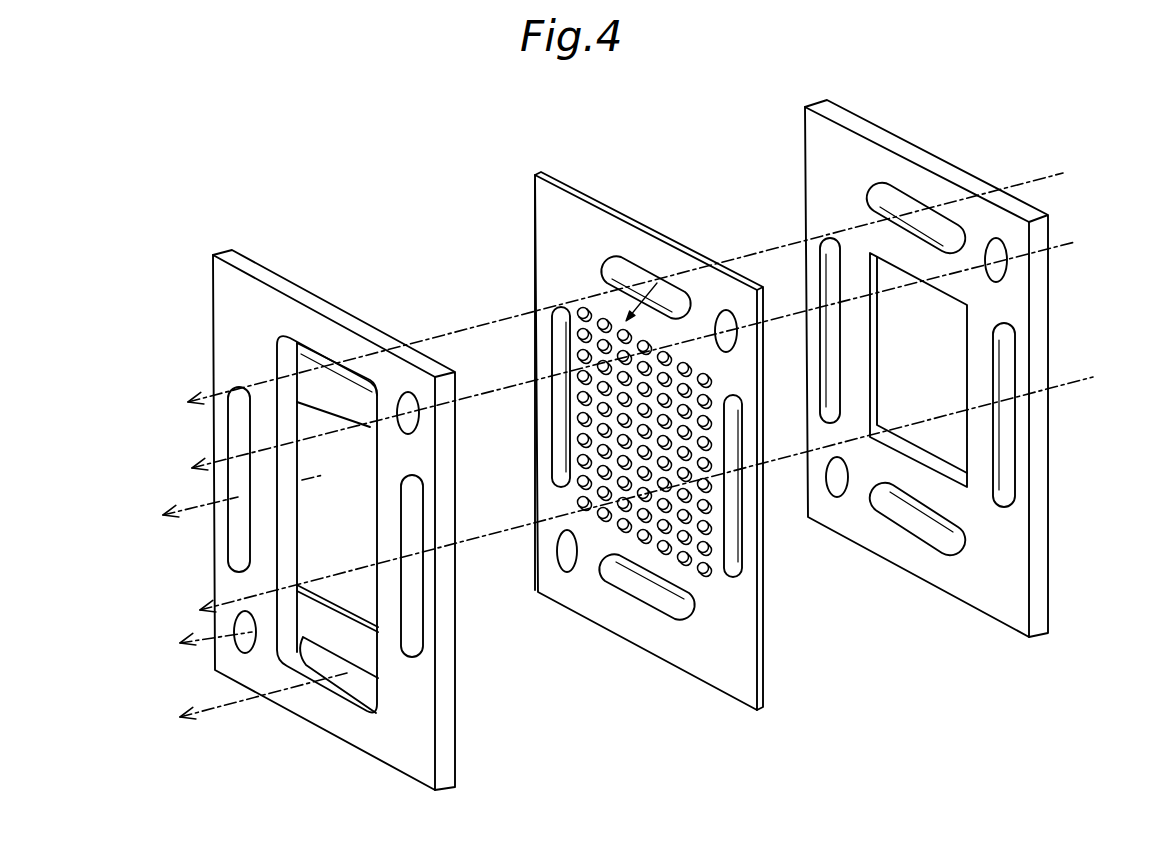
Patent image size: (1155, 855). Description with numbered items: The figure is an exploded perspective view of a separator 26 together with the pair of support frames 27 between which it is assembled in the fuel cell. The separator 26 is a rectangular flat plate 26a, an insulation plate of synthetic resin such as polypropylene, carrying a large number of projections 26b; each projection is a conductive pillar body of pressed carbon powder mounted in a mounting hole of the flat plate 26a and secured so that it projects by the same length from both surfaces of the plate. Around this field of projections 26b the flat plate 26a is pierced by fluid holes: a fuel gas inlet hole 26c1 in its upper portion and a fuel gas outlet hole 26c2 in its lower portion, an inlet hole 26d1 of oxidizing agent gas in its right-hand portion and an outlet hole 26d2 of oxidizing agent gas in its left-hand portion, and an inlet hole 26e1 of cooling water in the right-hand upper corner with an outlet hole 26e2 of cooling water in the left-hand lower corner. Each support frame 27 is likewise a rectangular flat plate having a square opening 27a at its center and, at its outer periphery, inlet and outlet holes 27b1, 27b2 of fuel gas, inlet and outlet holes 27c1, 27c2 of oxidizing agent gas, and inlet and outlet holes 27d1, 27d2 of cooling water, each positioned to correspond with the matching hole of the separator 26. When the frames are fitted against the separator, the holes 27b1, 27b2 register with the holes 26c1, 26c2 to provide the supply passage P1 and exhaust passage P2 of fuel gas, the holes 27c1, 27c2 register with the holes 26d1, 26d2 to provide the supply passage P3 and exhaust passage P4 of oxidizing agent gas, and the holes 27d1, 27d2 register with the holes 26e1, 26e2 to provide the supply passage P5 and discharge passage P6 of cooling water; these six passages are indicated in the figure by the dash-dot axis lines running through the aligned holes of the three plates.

The separator 26 is at (584, 182).
The flat plate 26a is at (542, 212).
The projections 26b is at (718, 540).
The fuel gas inlet hole 26c1 is at (626, 258).
The fuel gas outlet hole 26c2 is at (670, 616).
The inlet hole of oxidizing agent gas 26d1 is at (740, 440).
The outlet hole of oxidizing agent gas 26d2 is at (557, 437).
The inlet hole of cooling water 26e1 is at (732, 314).
The outlet hole of cooling water 26e2 is at (577, 572).
The support frame 27 is at (325, 282).
The square opening 27a is at (962, 450).
The inlet hole of fuel gas 27b1 is at (897, 195).
The outlet hole of fuel gas 27b2 is at (941, 535).
The inlet hole of oxidizing agent gas 27c1 is at (1008, 362).
The outlet hole of oxidizing agent gas 27c2 is at (840, 330).
The inlet hole of cooling water 27d1 is at (1000, 252).
The outlet hole of cooling water 27d2 is at (838, 492).
The supply passage of fuel gas P1 is at (1043, 177).
The exhaust passage of fuel gas P2 is at (213, 712).
The supply passage of oxidizing agent gas P3 is at (1093, 377).
The exhaust passage of oxidizing agent gas P4 is at (183, 508).
The supply passage of cooling water P5 is at (1075, 242).
The discharge passage of cooling water P6 is at (195, 632).